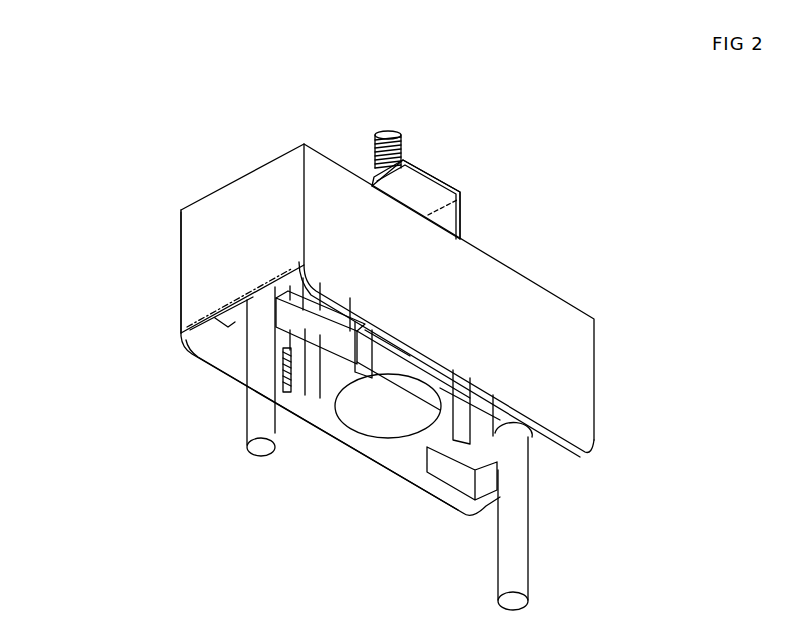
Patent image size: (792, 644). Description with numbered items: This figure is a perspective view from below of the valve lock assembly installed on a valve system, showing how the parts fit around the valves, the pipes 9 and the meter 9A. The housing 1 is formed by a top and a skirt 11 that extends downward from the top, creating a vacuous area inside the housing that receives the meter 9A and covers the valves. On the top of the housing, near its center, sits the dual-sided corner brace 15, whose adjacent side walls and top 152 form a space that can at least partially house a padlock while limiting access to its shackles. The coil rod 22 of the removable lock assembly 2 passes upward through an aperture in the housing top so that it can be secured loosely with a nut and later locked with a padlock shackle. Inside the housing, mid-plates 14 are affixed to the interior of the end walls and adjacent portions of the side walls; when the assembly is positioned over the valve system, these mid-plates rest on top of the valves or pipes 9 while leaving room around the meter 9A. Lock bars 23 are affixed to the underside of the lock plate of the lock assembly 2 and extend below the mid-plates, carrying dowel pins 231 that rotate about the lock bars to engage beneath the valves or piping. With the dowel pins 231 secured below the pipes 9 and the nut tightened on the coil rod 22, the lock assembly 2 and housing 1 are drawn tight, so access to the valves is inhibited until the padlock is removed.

The housing 1 is at (583, 368).
The skirt 11 is at (208, 259).
The mid-plates 14 is at (227, 318).
The dual-sided corner brace 15 is at (450, 218).
The top 152 is at (427, 190).
The removable lock assembly 2 is at (322, 378).
The coil rod 22 is at (394, 130).
The lock bars 23 is at (295, 395).
The dowel pins 231 is at (421, 442).
The pipes 9 is at (260, 433).
The meter 9A is at (380, 410).